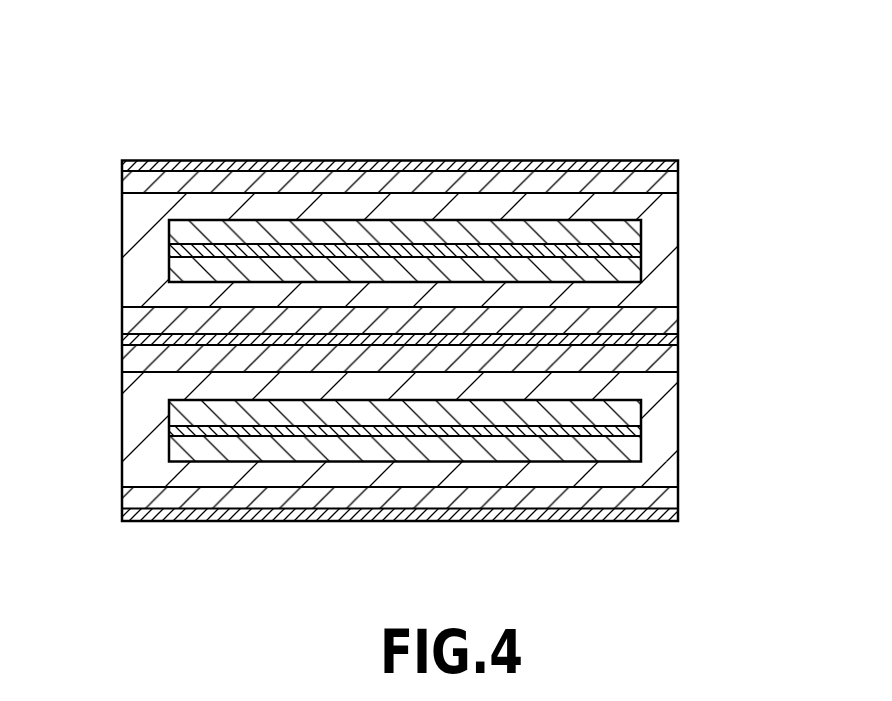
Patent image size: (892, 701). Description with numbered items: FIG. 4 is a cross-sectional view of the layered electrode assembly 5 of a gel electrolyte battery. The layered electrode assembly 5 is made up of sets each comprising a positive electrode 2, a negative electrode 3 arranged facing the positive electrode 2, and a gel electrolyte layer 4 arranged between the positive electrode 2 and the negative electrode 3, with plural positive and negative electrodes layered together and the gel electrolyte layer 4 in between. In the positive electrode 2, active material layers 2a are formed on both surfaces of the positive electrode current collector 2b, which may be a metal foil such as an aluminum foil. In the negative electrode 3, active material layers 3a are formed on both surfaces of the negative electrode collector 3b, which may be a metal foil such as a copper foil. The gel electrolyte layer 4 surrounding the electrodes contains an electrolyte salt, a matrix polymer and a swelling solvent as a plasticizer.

The positive electrode 2 is at (495, 245).
The active material layers 2a is at (633, 233).
The positive electrode current collector 2b is at (633, 250).
The negative electrode 3 is at (471, 365).
The active material layers 3a is at (667, 322).
The negative electrode collector 3b is at (667, 343).
The gel electrolyte layer 4 is at (128, 268).
The layered electrode assembly 5 is at (684, 119).